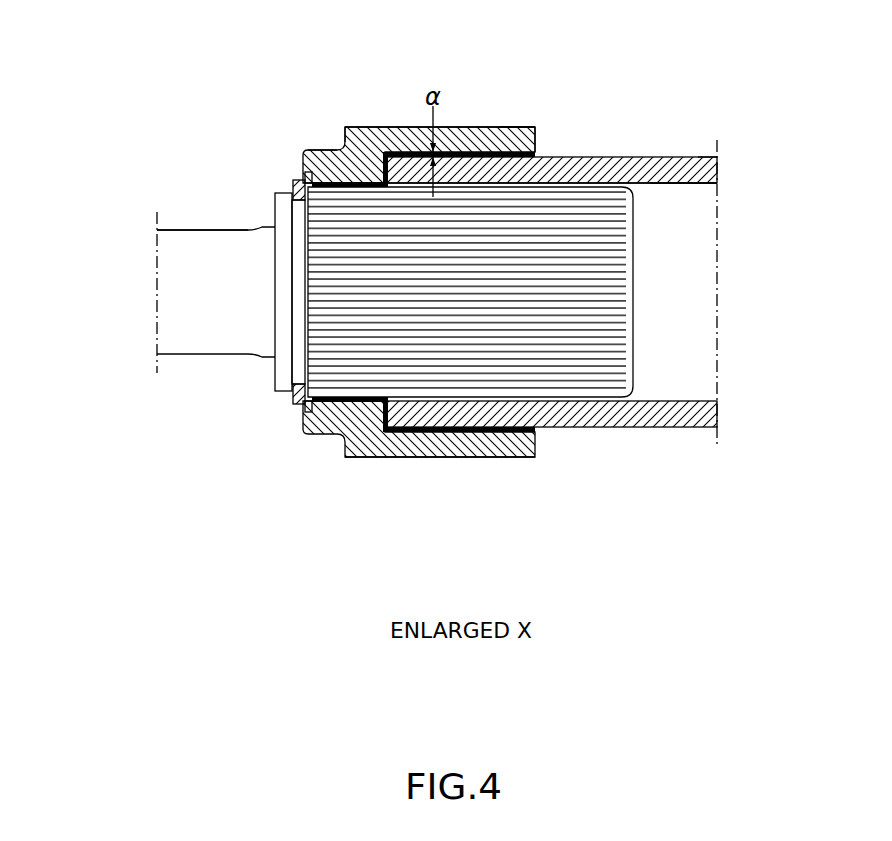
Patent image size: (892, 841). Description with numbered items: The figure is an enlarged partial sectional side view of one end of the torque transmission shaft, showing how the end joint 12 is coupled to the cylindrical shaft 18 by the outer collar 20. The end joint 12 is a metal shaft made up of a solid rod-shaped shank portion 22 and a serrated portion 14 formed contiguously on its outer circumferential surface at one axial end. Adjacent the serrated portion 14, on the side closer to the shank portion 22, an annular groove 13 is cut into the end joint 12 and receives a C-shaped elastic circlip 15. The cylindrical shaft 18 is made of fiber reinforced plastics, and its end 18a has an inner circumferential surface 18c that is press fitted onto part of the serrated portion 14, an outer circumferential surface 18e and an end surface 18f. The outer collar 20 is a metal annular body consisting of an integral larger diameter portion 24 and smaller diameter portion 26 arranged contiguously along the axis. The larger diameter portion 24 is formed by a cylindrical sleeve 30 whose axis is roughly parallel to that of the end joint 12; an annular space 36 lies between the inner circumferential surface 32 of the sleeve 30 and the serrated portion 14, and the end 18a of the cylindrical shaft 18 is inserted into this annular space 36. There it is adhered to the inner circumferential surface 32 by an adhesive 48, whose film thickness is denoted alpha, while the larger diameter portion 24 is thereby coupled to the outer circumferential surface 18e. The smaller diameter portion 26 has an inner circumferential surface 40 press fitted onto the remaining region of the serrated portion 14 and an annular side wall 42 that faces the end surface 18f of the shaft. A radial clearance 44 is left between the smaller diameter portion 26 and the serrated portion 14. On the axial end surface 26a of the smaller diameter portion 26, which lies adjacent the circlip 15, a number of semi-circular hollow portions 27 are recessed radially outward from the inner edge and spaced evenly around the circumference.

The end joint 12 is at (200, 224).
The annular groove 13 is at (297, 217).
The serrated portion 14 is at (592, 205).
The circlip 15 is at (293, 182).
The cylindrical shaft 18 is at (658, 145).
The end 18a is at (397, 436).
The inner circumferential surface 18c is at (663, 184).
The outer circumferential surface 18e is at (698, 154).
The end surface 18f is at (410, 126).
The outer collar 20 is at (458, 120).
The shank portion 22 is at (223, 330).
The larger diameter portion 24 is at (484, 132).
The smaller diameter portion 26 is at (315, 147).
The end surface 26a is at (300, 426).
The hollow portions 27 is at (298, 176).
The sleeve 30 is at (497, 447).
The inner circumferential surface 32 is at (520, 167).
The annular space 36 is at (535, 170).
The inner circumferential surface 40 is at (333, 188).
The annular side wall 42 is at (387, 148).
The clearance 44 is at (367, 148).
The adhesive 48 is at (507, 128).